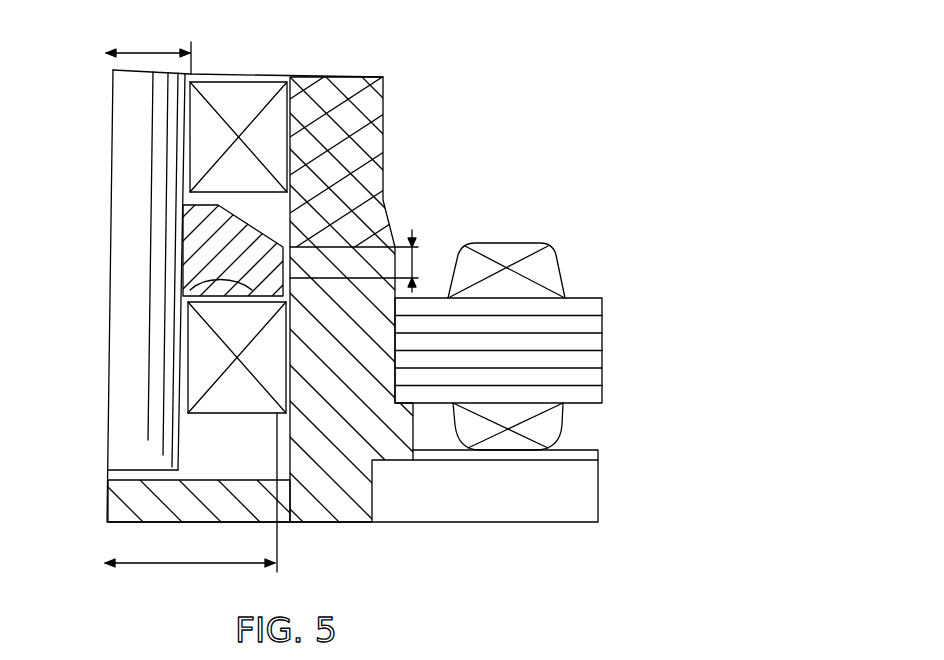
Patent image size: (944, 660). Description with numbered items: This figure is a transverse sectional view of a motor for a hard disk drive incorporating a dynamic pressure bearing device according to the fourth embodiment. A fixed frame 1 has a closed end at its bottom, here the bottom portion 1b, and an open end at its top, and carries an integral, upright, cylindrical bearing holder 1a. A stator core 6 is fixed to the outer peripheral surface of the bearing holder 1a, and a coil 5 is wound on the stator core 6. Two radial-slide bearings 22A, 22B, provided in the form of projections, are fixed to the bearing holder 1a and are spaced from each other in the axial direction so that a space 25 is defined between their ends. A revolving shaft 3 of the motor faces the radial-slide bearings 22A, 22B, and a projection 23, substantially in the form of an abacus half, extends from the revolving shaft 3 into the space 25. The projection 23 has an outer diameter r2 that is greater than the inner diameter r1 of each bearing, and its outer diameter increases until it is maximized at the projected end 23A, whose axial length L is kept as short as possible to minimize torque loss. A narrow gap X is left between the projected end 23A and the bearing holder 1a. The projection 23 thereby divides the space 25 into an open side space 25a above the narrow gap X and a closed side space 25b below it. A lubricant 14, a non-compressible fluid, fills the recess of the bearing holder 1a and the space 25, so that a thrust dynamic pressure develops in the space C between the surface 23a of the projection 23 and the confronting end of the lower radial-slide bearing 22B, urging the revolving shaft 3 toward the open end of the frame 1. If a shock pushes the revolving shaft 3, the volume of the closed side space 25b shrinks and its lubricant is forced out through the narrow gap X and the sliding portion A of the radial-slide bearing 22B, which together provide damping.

The frame 1 is at (357, 529).
The bearing holder 1a is at (380, 227).
The bottom portion of base 1b is at (108, 505).
The revolving shaft 3 is at (221, 296).
The coil 5 is at (550, 270).
The stator core 6 is at (596, 320).
The lubricant 14 is at (178, 218).
The radial-slide bearing 22A is at (237, 100).
The radial-slide bearing 22B is at (188, 357).
The projection 23 is at (190, 247).
The projected end 23A is at (238, 179).
The surface 23a is at (188, 314).
The space 25 is at (378, 166).
The open side space 25a is at (380, 132).
The closed side space 25b is at (243, 290).
The sliding portion A is at (190, 70).
The space C is at (222, 302).
The narrow gap X is at (300, 212).
The length L is at (415, 262).
The inner diameter r1 is at (148, 41).
The outer diameter r2 is at (191, 492).